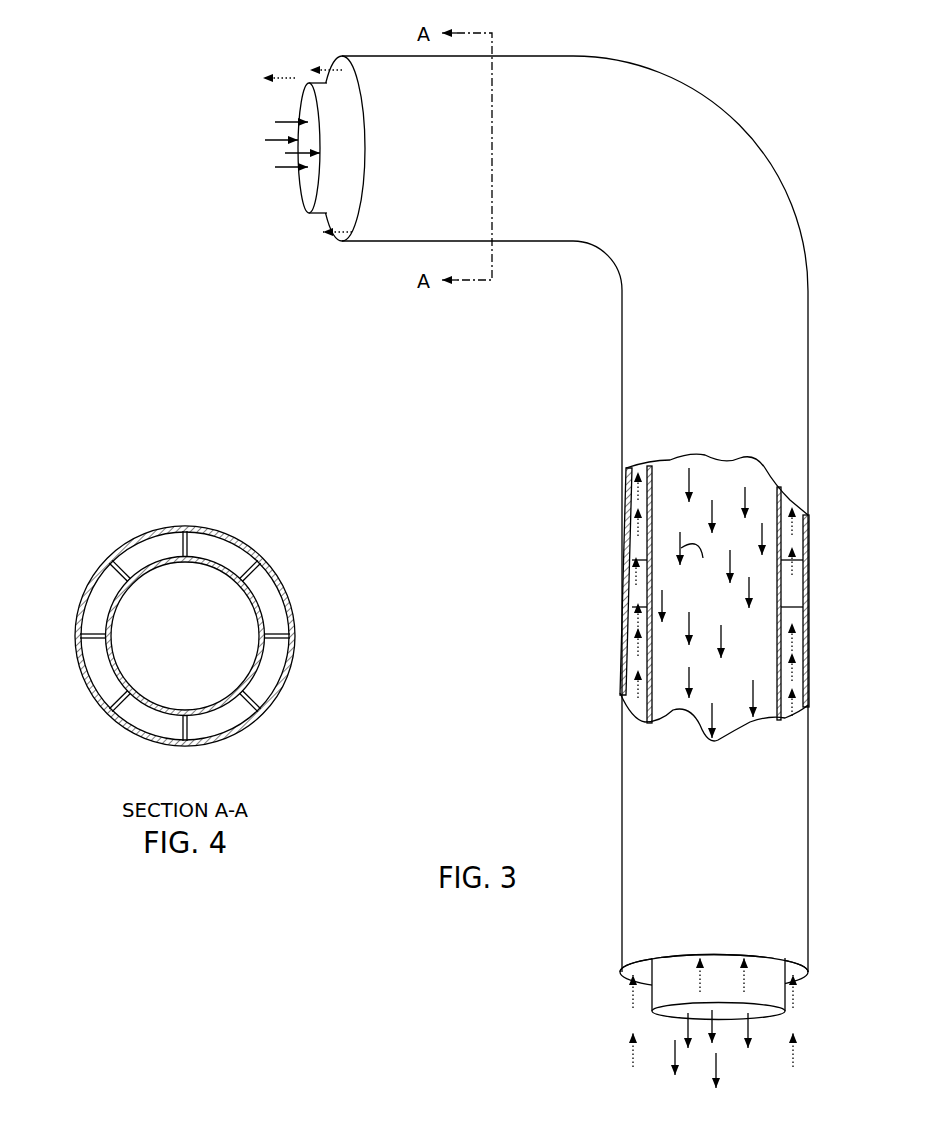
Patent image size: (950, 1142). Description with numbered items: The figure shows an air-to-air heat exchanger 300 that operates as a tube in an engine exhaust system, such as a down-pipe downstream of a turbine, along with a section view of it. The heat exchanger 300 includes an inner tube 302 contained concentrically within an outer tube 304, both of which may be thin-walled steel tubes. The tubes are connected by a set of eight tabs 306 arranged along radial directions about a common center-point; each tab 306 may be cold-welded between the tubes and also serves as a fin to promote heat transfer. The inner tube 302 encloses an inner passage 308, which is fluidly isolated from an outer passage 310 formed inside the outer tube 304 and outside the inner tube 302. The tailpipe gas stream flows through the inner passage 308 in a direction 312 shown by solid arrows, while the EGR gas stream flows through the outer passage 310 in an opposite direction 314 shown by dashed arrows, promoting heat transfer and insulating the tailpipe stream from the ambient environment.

In FIG. 3, the air-to-air heat exchanger 300 is at (512, 513).
In FIG. 3, the inner tube 302 is at (317, 215).
In FIG. 4, the inner tube 302 is at (127, 592).
In FIG. 3, the outer tube 304 is at (398, 241).
In FIG. 4, the outer tube 304 is at (285, 687).
In FIG. 3, the tabs 306 is at (632, 598).
In FIG. 4, the tabs 306 is at (190, 550).
In FIG. 3, the inner passage 308 is at (762, 652).
In FIG. 4, the inner passage 308 is at (130, 646).
In FIG. 3, the outer passage 310 is at (635, 533).
In FIG. 4, the outer passage 310 is at (108, 683).
In FIG. 3, the direction 312 is at (712, 603).
In FIG. 3, the direction 314 is at (792, 523).